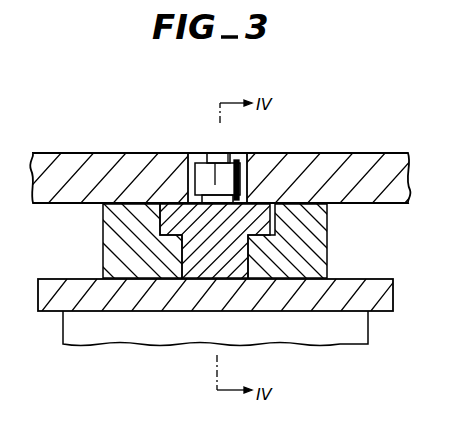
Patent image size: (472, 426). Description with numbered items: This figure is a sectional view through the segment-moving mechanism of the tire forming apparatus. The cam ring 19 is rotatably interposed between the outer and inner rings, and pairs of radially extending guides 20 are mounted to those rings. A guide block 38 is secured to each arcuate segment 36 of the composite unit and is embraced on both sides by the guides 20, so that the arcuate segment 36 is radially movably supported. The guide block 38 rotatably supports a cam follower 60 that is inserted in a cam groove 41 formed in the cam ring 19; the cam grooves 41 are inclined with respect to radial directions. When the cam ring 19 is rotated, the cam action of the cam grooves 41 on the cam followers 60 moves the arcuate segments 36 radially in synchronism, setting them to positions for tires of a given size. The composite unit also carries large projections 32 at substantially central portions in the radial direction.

The cam ring 19 is at (390, 160).
The guides 20 is at (105, 247).
The large projections 32 is at (363, 328).
The arcuate segments 36 is at (400, 279).
The guide blocks 38 is at (300, 223).
The cam grooves 41 is at (200, 153).
The cam follower 60 is at (248, 182).